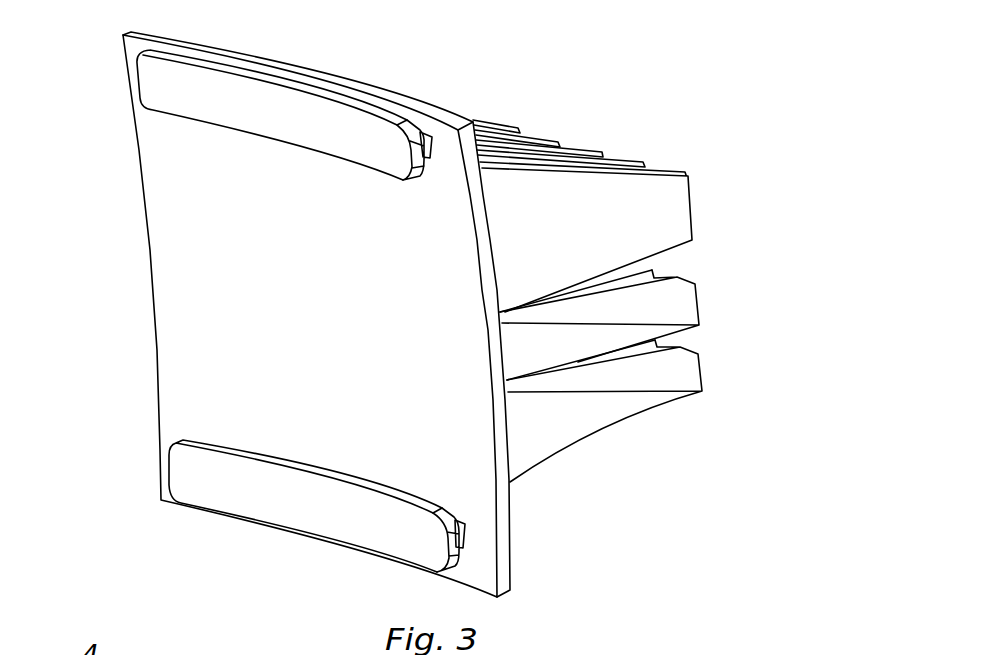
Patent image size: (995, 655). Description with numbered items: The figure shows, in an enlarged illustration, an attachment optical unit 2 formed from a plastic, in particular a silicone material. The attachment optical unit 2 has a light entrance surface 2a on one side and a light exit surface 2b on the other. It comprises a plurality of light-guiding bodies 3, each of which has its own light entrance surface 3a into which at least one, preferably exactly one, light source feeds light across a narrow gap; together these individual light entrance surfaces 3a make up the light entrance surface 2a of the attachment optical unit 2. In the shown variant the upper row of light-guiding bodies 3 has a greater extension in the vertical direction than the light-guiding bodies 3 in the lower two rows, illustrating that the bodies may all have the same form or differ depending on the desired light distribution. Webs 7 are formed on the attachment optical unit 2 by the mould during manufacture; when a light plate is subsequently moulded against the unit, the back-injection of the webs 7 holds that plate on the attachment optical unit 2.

The attachment optical unit 2 is at (449, 314).
The light entrance surface 2a is at (760, 152).
The light exit surface 2b is at (189, 395).
The light-guiding body 3 is at (663, 203).
The light entrance surface 3a is at (708, 208).
The web 7 is at (180, 80).